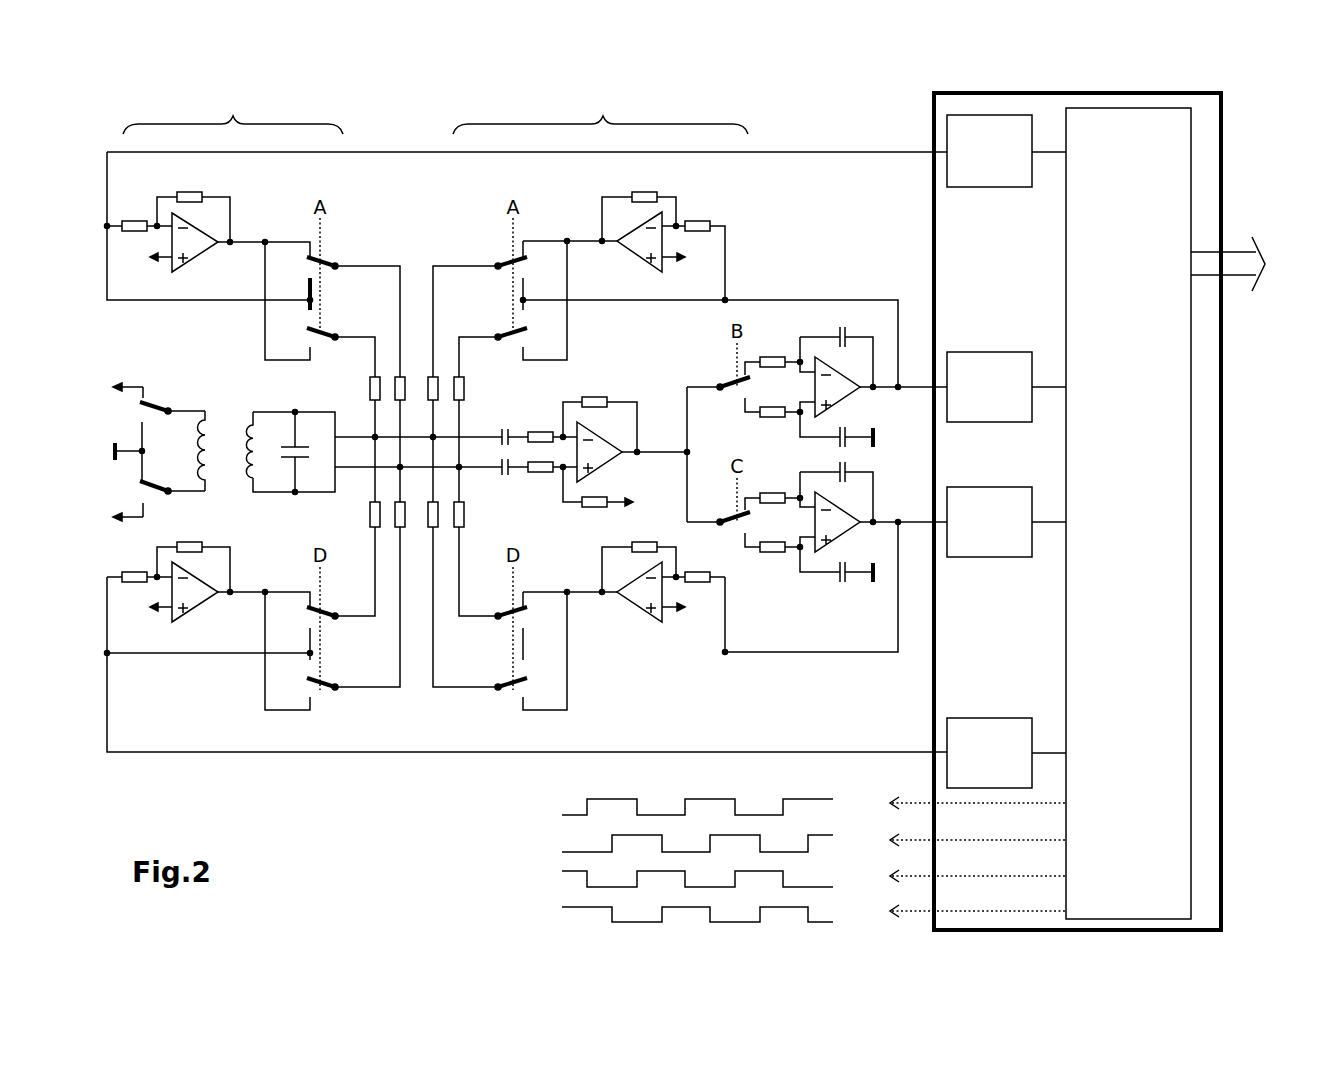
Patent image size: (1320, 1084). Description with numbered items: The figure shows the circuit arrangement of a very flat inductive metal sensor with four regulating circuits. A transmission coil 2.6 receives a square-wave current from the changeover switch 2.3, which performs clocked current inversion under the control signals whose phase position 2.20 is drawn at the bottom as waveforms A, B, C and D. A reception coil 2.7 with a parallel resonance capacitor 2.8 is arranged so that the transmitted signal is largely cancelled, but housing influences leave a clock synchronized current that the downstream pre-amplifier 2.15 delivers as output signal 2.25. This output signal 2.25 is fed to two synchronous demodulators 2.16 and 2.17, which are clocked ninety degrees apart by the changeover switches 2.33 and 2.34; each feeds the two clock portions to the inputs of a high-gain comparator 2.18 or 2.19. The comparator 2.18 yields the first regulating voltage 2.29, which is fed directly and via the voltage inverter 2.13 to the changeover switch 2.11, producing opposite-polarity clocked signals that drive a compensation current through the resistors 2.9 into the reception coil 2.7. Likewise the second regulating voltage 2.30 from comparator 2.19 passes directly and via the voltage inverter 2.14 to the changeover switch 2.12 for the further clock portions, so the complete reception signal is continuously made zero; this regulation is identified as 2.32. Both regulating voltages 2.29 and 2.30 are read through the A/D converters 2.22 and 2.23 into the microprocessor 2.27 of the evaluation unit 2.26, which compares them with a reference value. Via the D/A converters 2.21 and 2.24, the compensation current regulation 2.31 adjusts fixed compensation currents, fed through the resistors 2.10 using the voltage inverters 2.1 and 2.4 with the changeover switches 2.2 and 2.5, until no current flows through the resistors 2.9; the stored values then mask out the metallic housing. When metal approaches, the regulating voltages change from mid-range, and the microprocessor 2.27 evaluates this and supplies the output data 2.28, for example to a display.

The voltage inverter 2.1 is at (196, 234).
The changeover switch 2.2 is at (328, 320).
The changeover switch 2.3 is at (163, 478).
The voltage inverter 2.4 is at (192, 602).
The changeover switch 2.5 is at (330, 692).
The transmission coil 2.6 is at (213, 456).
The reception coil 2.7 is at (248, 432).
The resonance capacitor 2.8 is at (299, 437).
The resistors 2.9 is at (436, 500).
The resistors 2.10 is at (397, 500).
The changeover switch 2.11 is at (508, 323).
The changeover switch 2.12 is at (510, 692).
The voltage inverter 2.13 is at (632, 238).
The voltage inverter 2.14 is at (641, 590).
The pre-amplifier 2.15 is at (600, 443).
The synchronous demodulator 2.16 is at (765, 380).
The synchronous demodulator 2.17 is at (762, 522).
The high-gain comparator 2.18 is at (838, 380).
The high-gain comparator 2.19 is at (838, 522).
The phase position of control signals 2.20 is at (545, 860).
The D/A converter 2.21 is at (1010, 177).
The A/D converter 2.22 is at (980, 357).
The A/D converter 2.23 is at (990, 548).
The D/A converter 2.24 is at (978, 725).
The output signal 2.25 is at (664, 456).
The evaluation unit 2.26 is at (940, 97).
The microprocessor 2.27 is at (1029, 515).
The output data 2.28 is at (1254, 264).
The first regulating voltage 2.29 is at (889, 393).
The second regulating voltage 2.30 is at (834, 656).
The compensation current regulation 2.31 is at (233, 111).
The regulation 2.32 is at (600, 111).
The changeover switch 2.33 is at (727, 382).
The changeover switch 2.34 is at (724, 518).